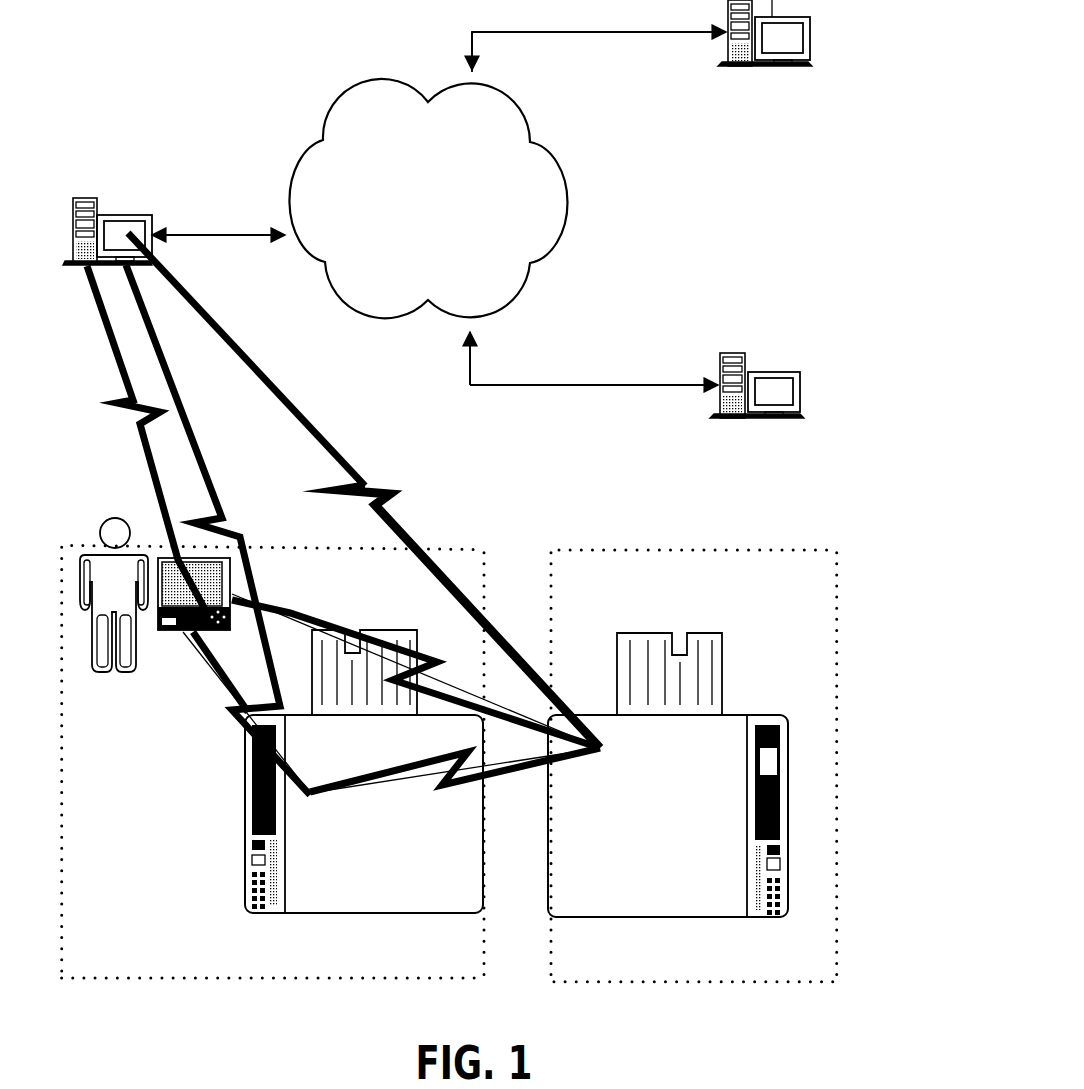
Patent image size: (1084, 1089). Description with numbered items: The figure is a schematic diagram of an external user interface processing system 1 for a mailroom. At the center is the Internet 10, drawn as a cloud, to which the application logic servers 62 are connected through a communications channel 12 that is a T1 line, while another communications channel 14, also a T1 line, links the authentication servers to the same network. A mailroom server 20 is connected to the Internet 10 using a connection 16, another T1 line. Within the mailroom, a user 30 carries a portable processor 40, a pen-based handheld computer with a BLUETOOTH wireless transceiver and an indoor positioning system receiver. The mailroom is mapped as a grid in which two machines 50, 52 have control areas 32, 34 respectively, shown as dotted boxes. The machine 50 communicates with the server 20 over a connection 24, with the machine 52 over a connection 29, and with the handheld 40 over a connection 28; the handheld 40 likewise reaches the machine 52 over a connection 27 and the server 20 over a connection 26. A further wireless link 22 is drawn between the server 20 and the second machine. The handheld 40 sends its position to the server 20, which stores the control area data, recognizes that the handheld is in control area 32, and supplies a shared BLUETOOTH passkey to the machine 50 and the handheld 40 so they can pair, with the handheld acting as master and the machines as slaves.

The external user interface processing system 1 is at (284, 77).
The Internet 10 is at (518, 114).
The communications channel 12 is at (620, 386).
The communications channel 14 is at (658, 35).
The connection 16 is at (240, 234).
The mailroom server 20 is at (112, 217).
The wireless communication link 22 is at (257, 364).
The connection 24 is at (181, 400).
The connection 26 is at (127, 378).
The connection 27 is at (273, 613).
The connection 28 is at (217, 660).
The connection 29 is at (523, 770).
The user 30 is at (137, 642).
The control area 32 is at (445, 546).
The control area 34 is at (613, 548).
The portable processor 40 is at (178, 577).
The machine 50 is at (387, 892).
The machine 52 is at (672, 885).
The application logic servers 62 is at (762, 372).